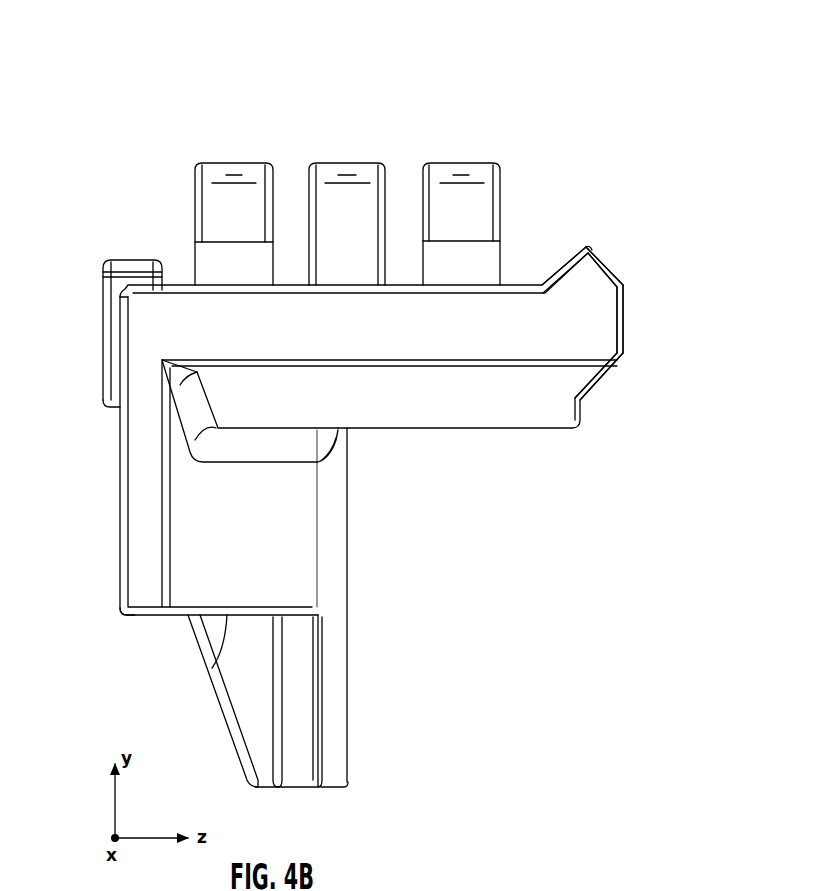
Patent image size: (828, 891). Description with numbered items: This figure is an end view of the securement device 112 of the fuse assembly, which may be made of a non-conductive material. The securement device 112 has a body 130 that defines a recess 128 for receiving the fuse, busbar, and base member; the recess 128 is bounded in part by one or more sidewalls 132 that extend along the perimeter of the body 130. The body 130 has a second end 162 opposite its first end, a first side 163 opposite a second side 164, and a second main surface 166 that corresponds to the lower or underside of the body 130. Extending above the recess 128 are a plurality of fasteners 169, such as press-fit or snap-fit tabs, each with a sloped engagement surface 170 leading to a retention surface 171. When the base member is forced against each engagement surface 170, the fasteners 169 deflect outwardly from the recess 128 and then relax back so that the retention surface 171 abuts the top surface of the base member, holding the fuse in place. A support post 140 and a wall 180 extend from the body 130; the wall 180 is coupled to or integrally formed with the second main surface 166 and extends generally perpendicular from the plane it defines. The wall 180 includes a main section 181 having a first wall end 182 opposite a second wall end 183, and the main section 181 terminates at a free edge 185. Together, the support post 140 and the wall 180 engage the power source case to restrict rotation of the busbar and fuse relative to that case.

The securement device 112 is at (362, 80).
The recess 128 is at (529, 262).
The body 130 is at (616, 251).
The sidewall 132 is at (140, 300).
The support post 140 is at (334, 733).
The second end 162 is at (606, 310).
The first side 163 is at (634, 352).
The second side 164 is at (96, 322).
The second main surface 166 is at (457, 433).
The fasteners 169 is at (233, 158).
The sloped engagement surface 170 is at (212, 203).
The retention surface 171 is at (215, 247).
The wall 180 is at (186, 528).
The main section 181 is at (280, 527).
The first wall end 182 is at (307, 543).
The second wall end 183 is at (145, 598).
The free edge 185 is at (227, 618).